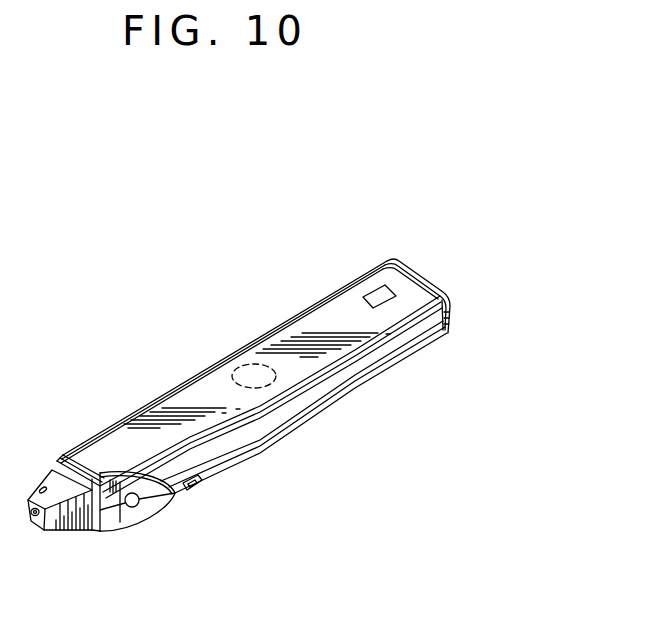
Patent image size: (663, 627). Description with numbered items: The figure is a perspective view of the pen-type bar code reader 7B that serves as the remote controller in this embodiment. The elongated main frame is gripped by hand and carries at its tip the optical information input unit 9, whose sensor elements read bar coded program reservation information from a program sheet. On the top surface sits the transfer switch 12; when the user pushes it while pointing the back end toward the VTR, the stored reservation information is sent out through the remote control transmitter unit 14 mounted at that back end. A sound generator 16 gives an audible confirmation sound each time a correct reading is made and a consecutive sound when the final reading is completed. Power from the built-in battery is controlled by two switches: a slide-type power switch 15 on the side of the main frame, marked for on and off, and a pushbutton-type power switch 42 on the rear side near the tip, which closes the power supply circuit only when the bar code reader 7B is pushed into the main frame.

The bar code reader 7B is at (177, 398).
The optical information input unit 9 is at (27, 518).
The transfer switch 12 is at (370, 285).
The remote control transmitter unit 14 is at (430, 278).
The slide-type power switch 15 is at (200, 489).
The sound generator 16 is at (248, 364).
The pushbutton-type power switch 42 is at (136, 507).